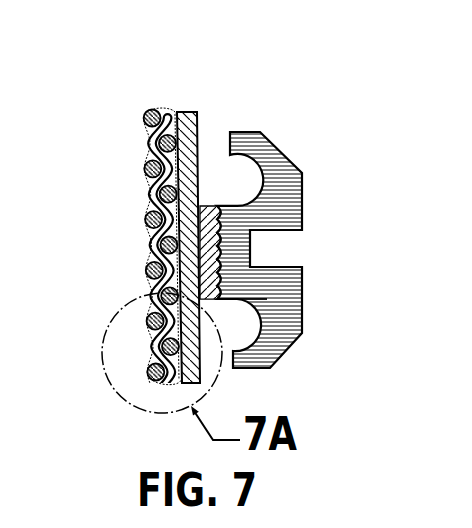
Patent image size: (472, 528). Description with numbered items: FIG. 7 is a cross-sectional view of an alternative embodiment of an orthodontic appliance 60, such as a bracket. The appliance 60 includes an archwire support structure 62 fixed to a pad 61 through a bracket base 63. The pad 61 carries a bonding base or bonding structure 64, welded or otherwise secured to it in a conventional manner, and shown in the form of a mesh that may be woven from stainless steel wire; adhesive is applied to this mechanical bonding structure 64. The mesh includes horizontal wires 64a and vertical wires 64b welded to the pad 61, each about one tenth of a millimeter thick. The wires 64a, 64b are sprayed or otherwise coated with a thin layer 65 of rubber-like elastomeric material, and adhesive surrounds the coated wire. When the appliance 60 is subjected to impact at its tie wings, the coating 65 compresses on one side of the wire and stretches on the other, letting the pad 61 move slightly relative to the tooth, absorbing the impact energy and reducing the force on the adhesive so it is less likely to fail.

The orthodontic appliance 60 is at (271, 229).
The pad 61 is at (204, 110).
The archwire support structure 62 is at (303, 173).
The bracket base 63 is at (172, 225).
The bonding structure 64 is at (116, 224).
The horizontal wires 64a is at (143, 168).
The vertical wires 64b is at (148, 141).
The coating 65 is at (143, 253).